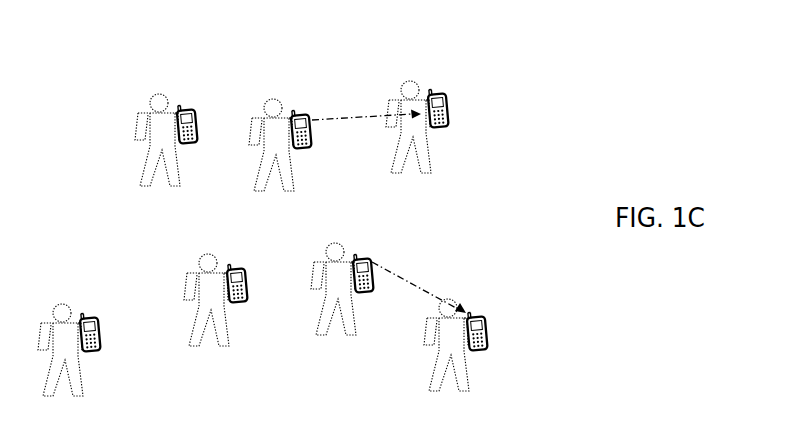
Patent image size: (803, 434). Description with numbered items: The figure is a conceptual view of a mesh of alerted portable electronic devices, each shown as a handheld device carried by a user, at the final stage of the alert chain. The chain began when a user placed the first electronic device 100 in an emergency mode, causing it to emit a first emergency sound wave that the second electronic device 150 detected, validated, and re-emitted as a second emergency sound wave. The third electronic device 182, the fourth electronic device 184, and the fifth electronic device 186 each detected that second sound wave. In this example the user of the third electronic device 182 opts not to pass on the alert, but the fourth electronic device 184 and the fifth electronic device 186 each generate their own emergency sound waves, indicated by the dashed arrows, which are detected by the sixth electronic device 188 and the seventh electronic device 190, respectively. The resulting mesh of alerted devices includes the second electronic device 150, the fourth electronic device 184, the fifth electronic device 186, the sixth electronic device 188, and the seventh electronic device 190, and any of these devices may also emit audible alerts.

The first electronic device 100 is at (96, 312).
The second electronic device 150 is at (245, 302).
The third electronic device 182 is at (181, 104).
The fourth electronic device 184 is at (306, 112).
The fifth electronic device 186 is at (369, 254).
The sixth electronic device 188 is at (447, 90).
The seventh electronic device 190 is at (482, 313).